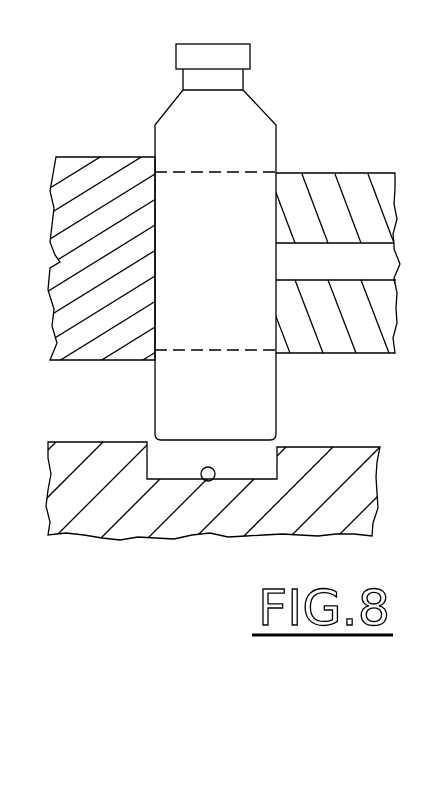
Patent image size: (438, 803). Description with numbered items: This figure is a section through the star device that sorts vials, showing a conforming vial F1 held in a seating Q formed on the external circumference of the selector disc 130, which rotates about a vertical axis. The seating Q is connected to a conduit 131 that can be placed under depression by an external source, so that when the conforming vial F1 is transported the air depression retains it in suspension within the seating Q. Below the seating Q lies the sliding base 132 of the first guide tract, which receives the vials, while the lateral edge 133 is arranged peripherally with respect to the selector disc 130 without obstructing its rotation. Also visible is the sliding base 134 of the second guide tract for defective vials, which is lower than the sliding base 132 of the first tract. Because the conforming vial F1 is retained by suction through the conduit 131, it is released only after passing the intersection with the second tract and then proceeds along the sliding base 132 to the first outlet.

The conforming vial F1 is at (178, 128).
The seating Q is at (258, 172).
The selector disc 130 is at (357, 193).
The conduit 131 is at (350, 267).
The sliding base 132 is at (103, 443).
The lateral edge 133 is at (98, 177).
The sliding base 134 is at (208, 481).